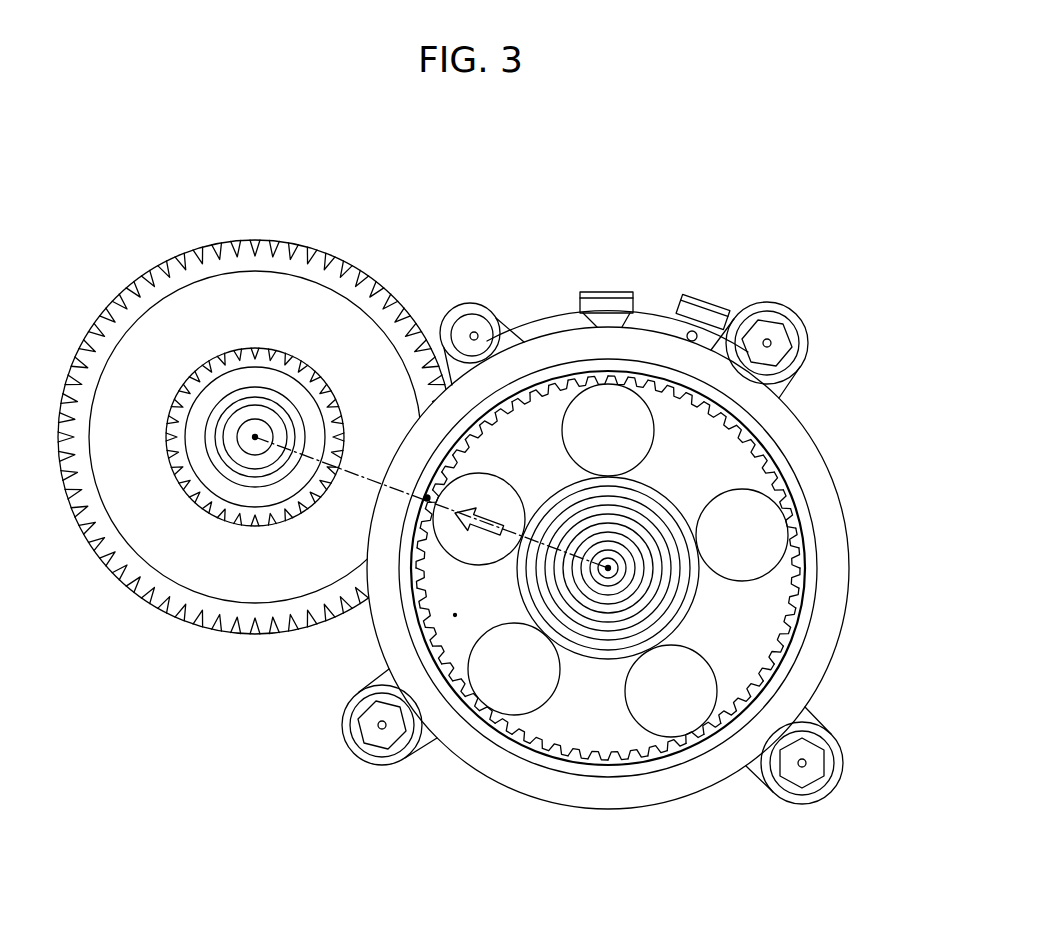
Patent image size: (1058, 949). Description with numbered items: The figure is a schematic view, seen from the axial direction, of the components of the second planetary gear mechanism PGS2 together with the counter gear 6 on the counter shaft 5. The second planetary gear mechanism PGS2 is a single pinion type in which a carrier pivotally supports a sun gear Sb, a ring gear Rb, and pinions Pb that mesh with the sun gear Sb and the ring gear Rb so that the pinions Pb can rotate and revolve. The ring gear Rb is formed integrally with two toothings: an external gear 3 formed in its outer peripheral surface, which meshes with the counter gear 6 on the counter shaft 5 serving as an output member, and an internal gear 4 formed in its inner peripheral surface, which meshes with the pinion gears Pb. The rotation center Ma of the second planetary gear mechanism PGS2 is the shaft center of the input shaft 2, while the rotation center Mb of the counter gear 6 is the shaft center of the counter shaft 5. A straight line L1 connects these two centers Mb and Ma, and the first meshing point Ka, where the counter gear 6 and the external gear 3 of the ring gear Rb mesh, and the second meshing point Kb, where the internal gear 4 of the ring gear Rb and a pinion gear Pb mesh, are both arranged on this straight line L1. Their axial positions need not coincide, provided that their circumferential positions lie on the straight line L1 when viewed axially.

The input shaft 2 is at (614, 570).
The external gear 3 is at (673, 372).
The internal gear 4 is at (707, 418).
The counter shaft 5 is at (259, 417).
The counter gear 6 is at (184, 244).
The second planetary gear mechanism PGS2 is at (619, 280).
The pinion Pb is at (562, 400).
The ring gear Rb is at (637, 366).
The sun gear Sb is at (677, 490).
The rotation center of the second planetary gear mechanism Ma is at (627, 567).
The rotation center of the counter gear Mb is at (254, 439).
The first meshing point Ka is at (425, 500).
The second meshing point Kb is at (455, 615).
The straight line L1 is at (357, 472).